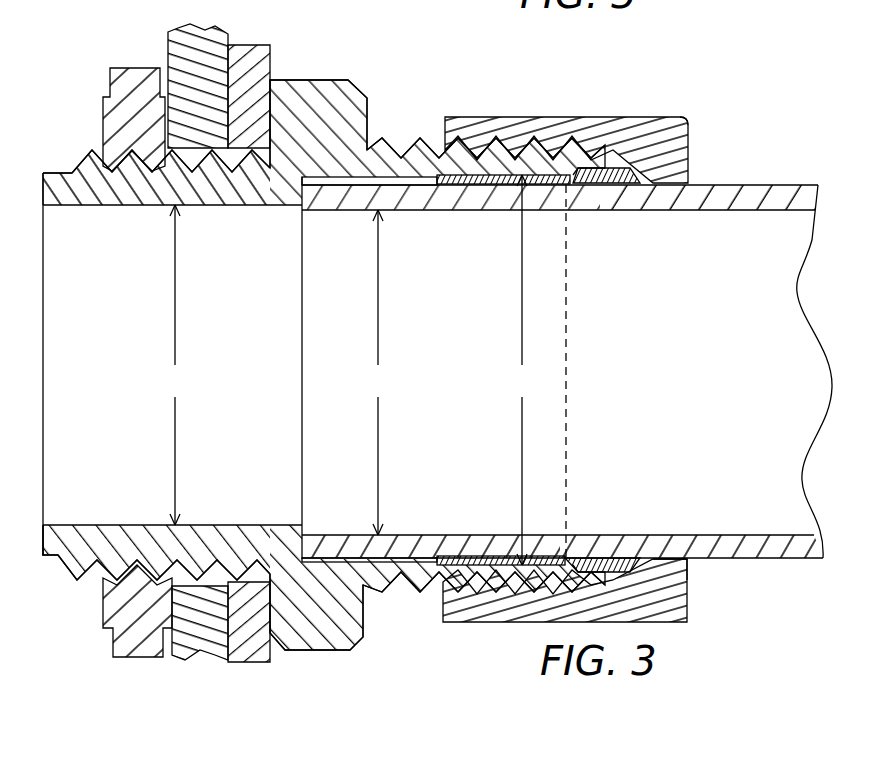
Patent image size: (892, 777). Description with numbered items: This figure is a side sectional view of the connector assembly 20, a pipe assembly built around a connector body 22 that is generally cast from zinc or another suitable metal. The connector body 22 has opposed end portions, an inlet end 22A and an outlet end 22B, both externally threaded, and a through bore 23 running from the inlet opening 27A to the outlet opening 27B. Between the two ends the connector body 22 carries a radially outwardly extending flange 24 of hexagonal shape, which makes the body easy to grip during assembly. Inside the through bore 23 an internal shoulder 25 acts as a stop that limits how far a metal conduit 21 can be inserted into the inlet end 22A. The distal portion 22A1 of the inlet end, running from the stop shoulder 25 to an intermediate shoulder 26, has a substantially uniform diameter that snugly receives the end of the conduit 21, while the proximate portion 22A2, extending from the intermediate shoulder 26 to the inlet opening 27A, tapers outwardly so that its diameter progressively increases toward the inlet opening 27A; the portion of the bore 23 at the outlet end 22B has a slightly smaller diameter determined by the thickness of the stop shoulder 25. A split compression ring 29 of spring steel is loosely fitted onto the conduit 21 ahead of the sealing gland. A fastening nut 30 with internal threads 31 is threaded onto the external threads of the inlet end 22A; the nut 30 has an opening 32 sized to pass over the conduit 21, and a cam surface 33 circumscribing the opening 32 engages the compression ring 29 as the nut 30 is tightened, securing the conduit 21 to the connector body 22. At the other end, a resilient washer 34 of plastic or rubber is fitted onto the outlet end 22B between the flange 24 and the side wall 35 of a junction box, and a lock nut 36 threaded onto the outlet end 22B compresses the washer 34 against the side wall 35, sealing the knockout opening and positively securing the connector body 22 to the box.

The connector assembly 20 is at (412, 113).
The conduit 21 is at (697, 195).
The connector body 22 is at (345, 130).
The inlet end 22A is at (512, 165).
The distal portion of the inlet end 22A1 is at (424, 533).
The proximate portion of the inlet end 22A2 is at (447, 573).
The outlet end 22B is at (80, 160).
The through bore 23 is at (80, 450).
The flange 24 is at (315, 80).
The internal shoulder 25 is at (280, 203).
The intermediate shoulder 26 is at (450, 182).
The inlet opening 27A is at (599, 371).
The outlet opening 27B is at (43, 230).
The compression ring 29 is at (660, 114).
The fastening nut 30 is at (593, 114).
The internal threads 31 is at (480, 176).
The nut opening 32 is at (687, 559).
The cam surface 33 is at (598, 165).
The resilient washer 34 is at (262, 74).
The side wall 35 is at (182, 32).
The lock nut 36 is at (135, 85).